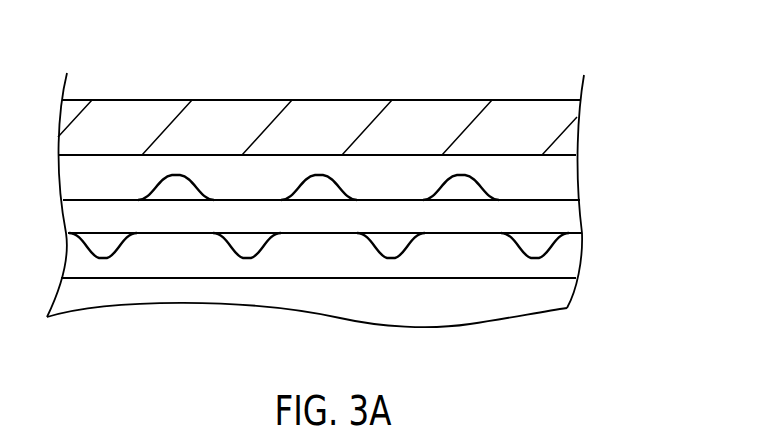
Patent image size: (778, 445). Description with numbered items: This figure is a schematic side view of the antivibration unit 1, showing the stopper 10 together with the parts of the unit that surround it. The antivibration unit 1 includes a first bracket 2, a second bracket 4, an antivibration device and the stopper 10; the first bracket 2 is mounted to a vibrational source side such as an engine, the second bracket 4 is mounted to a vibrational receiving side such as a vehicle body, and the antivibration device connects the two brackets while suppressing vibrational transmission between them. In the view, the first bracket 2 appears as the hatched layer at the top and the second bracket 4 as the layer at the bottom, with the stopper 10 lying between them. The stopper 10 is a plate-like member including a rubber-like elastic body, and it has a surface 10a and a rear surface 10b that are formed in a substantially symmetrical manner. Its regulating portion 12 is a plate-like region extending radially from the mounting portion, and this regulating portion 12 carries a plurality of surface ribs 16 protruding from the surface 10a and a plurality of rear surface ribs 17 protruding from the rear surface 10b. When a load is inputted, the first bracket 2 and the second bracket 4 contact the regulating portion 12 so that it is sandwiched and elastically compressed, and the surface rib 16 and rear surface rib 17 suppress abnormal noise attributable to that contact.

The antivibration unit 1 is at (610, 84).
The first bracket 2 is at (332, 113).
The second bracket 4 is at (442, 310).
The stopper 10 is at (590, 173).
The surface 10a is at (242, 199).
The rear surface 10b is at (319, 235).
The regulating portion 12 is at (382, 218).
The surface rib 16 is at (170, 185).
The rear surface rib 17 is at (396, 248).